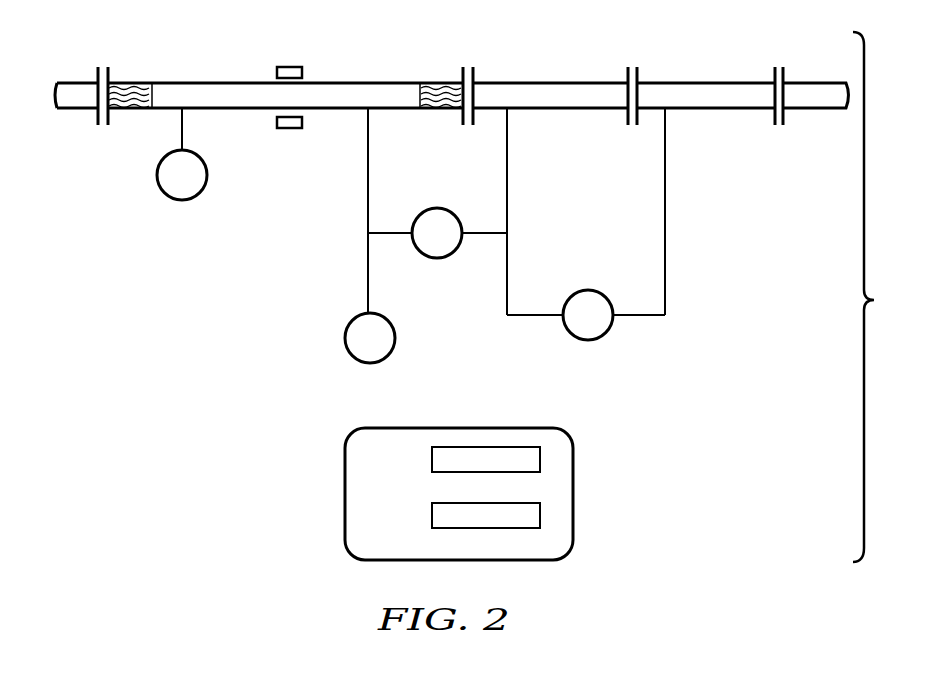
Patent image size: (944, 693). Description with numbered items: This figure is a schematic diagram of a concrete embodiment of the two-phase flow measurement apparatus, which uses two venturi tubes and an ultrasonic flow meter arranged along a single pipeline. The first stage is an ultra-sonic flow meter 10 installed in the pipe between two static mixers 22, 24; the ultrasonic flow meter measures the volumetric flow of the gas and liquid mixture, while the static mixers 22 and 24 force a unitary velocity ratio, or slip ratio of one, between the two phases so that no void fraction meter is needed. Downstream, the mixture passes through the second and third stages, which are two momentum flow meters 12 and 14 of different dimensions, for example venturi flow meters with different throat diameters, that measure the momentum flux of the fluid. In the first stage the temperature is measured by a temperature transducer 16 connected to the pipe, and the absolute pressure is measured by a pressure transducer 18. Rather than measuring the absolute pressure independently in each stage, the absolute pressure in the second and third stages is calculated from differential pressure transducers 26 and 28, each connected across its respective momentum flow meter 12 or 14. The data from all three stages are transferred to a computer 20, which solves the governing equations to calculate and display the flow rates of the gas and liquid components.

The ultra-sonic flow meter 10 is at (292, 67).
The momentum flow meter 12 is at (575, 83).
The momentum flow meter 14 is at (700, 83).
The temperature transducer 16 is at (170, 196).
The pressure transducer 18 is at (345, 340).
The computer 20 is at (345, 491).
The static mixer 22 is at (138, 83).
The static mixer 24 is at (443, 83).
The differential pressure transducer 26 is at (438, 258).
The differential pressure transducer 28 is at (590, 290).